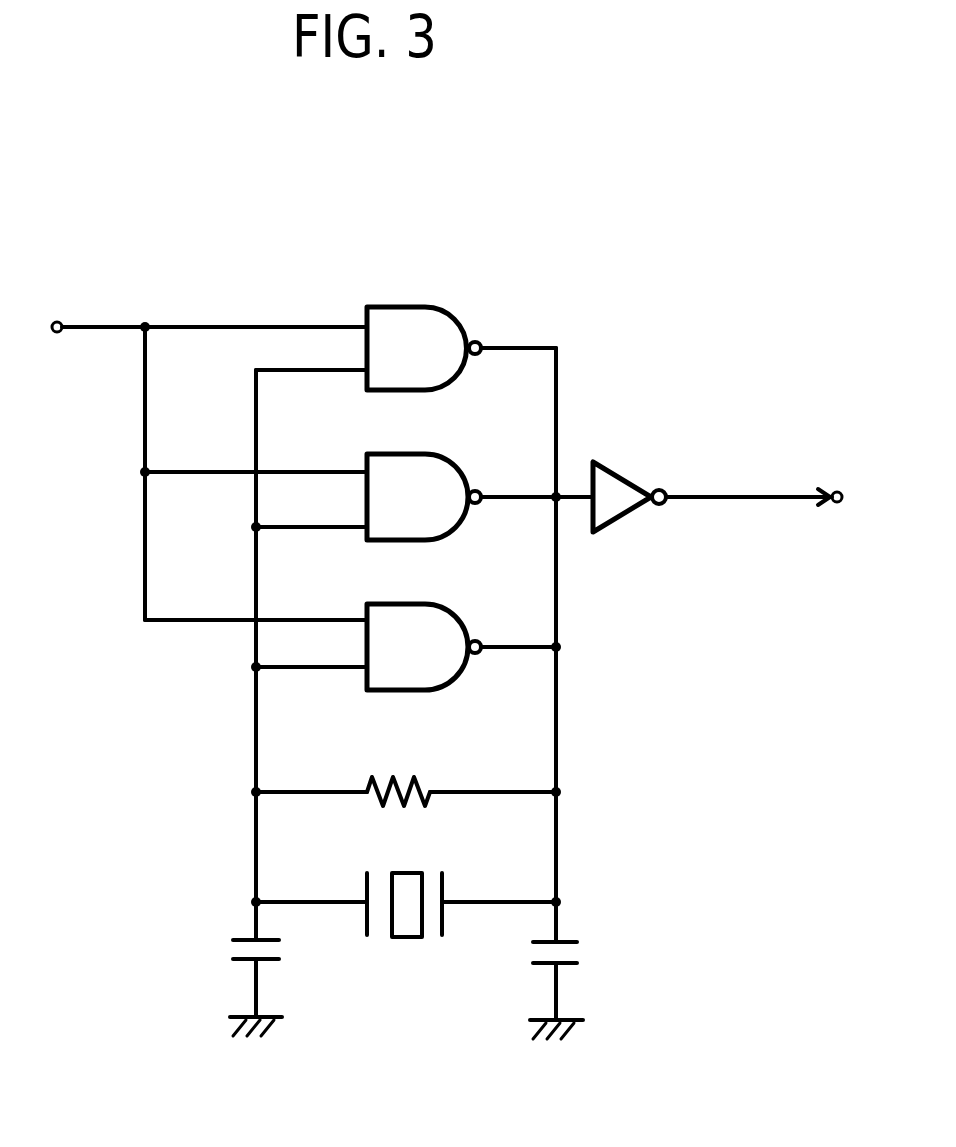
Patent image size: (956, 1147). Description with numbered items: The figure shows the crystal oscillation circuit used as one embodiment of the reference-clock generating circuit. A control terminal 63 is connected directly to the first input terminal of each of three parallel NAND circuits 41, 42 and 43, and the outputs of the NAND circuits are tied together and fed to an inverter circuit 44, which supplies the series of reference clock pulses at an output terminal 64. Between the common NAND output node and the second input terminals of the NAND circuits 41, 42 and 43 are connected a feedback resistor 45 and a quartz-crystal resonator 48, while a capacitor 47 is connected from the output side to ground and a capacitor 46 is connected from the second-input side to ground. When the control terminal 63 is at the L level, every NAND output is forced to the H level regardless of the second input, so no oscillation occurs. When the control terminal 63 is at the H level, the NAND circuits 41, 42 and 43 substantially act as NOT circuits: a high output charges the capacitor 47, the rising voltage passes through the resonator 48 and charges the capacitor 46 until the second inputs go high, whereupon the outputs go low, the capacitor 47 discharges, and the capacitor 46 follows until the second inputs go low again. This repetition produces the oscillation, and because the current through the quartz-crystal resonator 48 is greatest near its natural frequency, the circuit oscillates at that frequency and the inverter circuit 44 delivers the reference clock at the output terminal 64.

The control terminal 63 is at (58, 321).
The NAND circuit 41 is at (432, 304).
The NAND circuit 42 is at (441, 455).
The NAND circuit 43 is at (441, 604).
The inverter circuit 44 is at (614, 470).
The output terminal 64 is at (838, 492).
The resistor 45 is at (406, 771).
The capacitor 46 is at (290, 987).
The capacitor 47 is at (591, 990).
The quartz-crystal resonator 48 is at (406, 938).